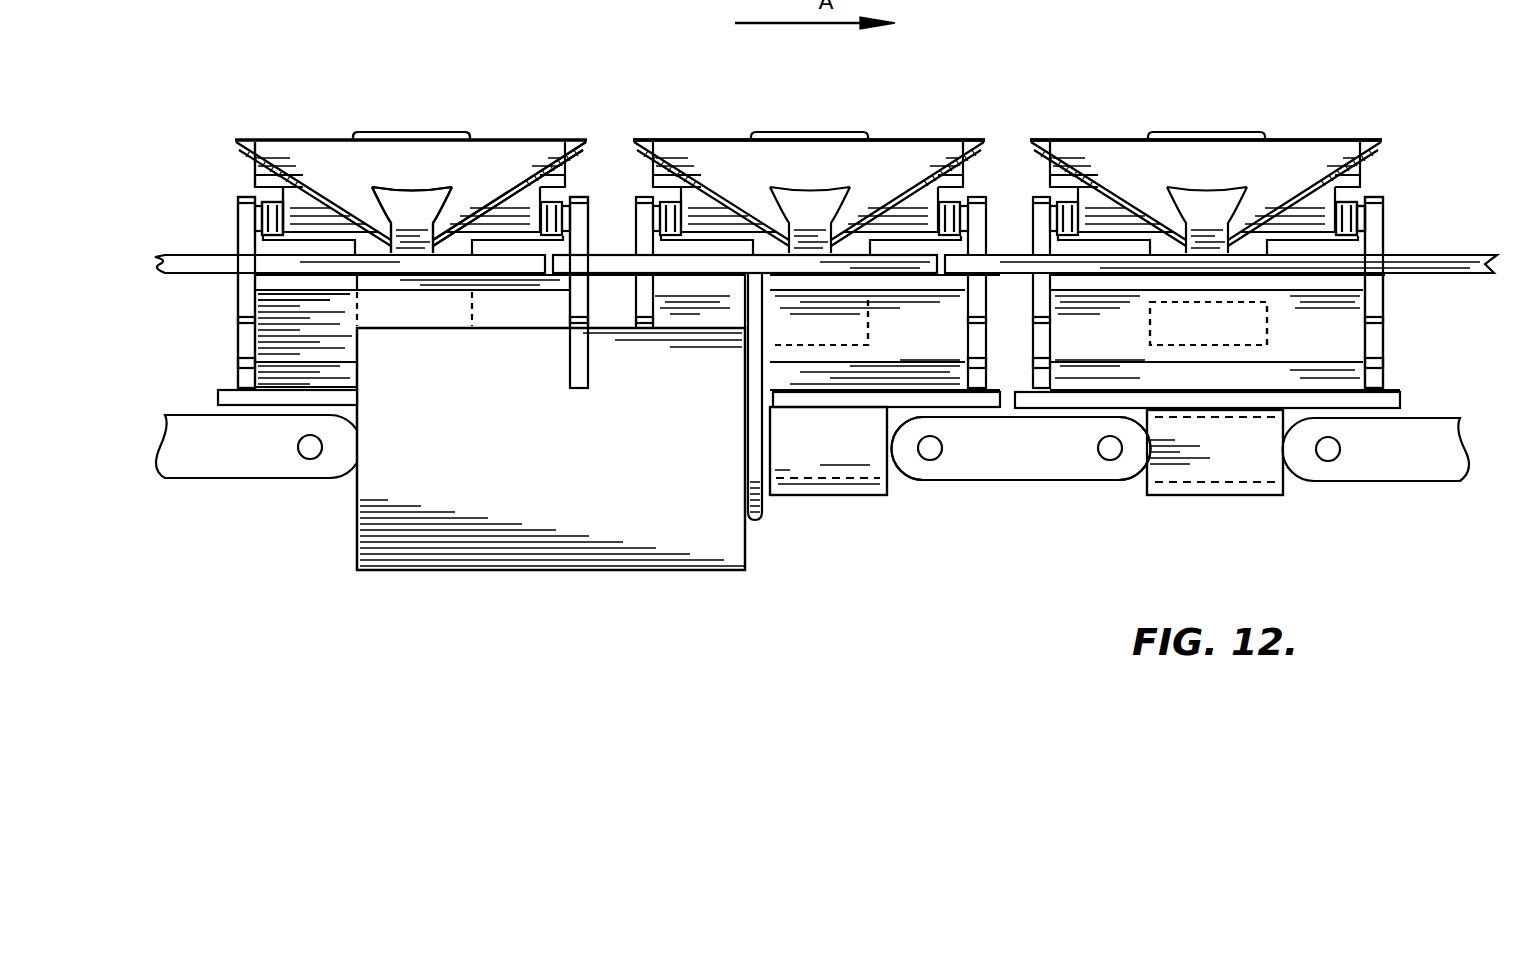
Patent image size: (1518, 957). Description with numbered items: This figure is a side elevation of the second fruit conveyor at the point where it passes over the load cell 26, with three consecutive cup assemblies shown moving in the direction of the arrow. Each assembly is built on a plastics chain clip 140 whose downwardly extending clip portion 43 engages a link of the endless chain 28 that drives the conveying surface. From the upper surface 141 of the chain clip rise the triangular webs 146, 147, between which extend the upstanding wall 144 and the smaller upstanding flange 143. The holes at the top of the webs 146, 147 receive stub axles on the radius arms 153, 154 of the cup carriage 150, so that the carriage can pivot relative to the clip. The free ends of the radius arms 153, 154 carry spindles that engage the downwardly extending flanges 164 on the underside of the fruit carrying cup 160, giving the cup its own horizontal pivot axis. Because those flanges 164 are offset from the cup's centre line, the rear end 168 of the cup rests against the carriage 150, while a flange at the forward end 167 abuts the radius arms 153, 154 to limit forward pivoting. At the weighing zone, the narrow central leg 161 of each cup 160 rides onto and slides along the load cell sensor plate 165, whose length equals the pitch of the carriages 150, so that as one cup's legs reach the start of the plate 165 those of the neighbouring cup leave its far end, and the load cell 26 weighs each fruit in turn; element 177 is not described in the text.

The load cell 26 is at (568, 455).
The endless chain 28 is at (1008, 452).
The clip portion 43 is at (848, 468).
The chain clip 140 is at (1409, 350).
The upper surface 141 is at (228, 398).
The upstanding flange 143 is at (290, 372).
The upstanding wall 144 is at (282, 320).
The triangular web 146 is at (242, 197).
The triangular web 147 is at (586, 197).
The cup carriage 150 is at (1374, 181).
The radius arm 153 is at (266, 204).
The radius arm 154 is at (1383, 217).
The fruit carrying cup 160 is at (907, 120).
The leg 161 is at (414, 202).
The downwardly extending flange 164 is at (303, 202).
The load cell sensor plate 165 is at (900, 266).
The forward end 167 is at (375, 132).
The rear end 168 is at (484, 203).
The recess 177 is at (1172, 283).